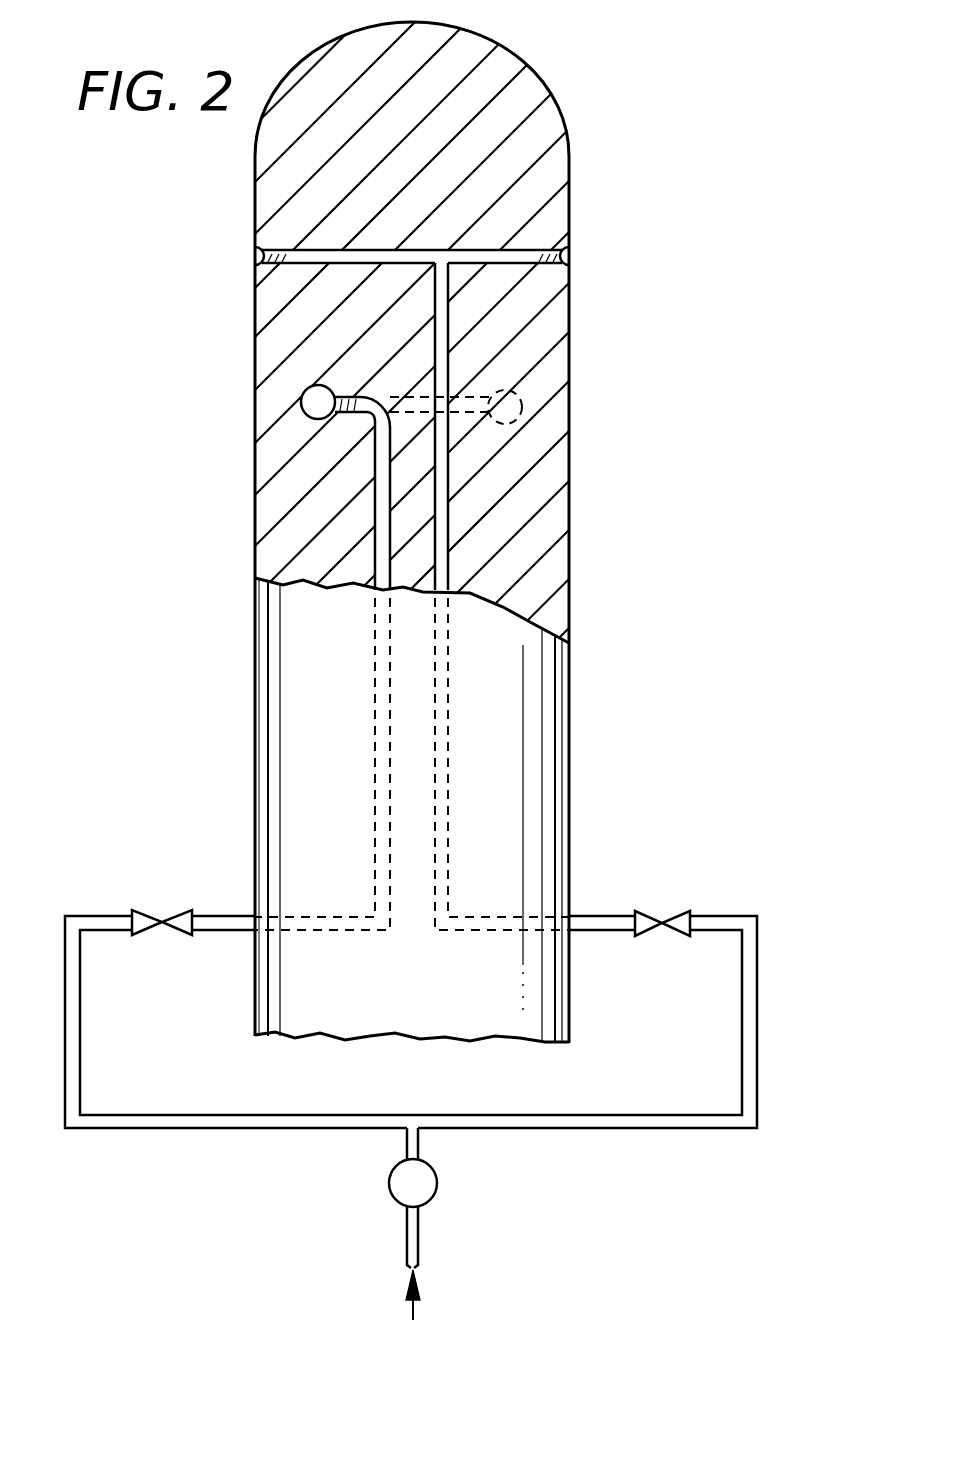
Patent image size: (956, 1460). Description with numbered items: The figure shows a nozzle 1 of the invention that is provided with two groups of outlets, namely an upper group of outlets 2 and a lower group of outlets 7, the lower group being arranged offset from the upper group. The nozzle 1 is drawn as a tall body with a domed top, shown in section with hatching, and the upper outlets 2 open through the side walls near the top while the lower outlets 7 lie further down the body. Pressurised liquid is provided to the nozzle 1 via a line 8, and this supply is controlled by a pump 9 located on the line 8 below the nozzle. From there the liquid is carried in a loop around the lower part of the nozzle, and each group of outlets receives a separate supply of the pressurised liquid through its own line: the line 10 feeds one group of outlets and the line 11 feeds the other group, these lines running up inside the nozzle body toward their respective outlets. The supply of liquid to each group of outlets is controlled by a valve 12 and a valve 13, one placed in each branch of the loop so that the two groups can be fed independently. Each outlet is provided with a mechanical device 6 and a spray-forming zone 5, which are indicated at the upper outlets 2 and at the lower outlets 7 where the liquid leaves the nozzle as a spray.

The nozzle 1 is at (590, 566).
The outlets 2 is at (250, 249).
The spray-forming zone 5 is at (250, 266).
The mechanical device 6 is at (280, 248).
The outlets 7 is at (303, 412).
The line 8 is at (405, 1239).
The pump 9 is at (438, 1188).
The line 10 is at (448, 690).
The line 11 is at (378, 683).
The valve 12 is at (640, 913).
The valve 13 is at (150, 913).